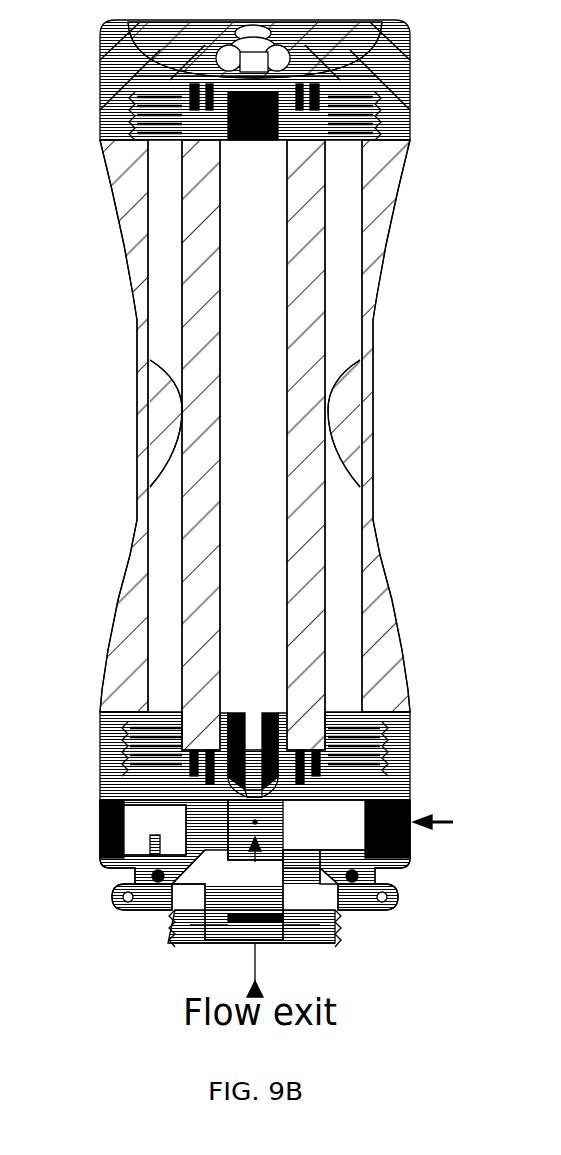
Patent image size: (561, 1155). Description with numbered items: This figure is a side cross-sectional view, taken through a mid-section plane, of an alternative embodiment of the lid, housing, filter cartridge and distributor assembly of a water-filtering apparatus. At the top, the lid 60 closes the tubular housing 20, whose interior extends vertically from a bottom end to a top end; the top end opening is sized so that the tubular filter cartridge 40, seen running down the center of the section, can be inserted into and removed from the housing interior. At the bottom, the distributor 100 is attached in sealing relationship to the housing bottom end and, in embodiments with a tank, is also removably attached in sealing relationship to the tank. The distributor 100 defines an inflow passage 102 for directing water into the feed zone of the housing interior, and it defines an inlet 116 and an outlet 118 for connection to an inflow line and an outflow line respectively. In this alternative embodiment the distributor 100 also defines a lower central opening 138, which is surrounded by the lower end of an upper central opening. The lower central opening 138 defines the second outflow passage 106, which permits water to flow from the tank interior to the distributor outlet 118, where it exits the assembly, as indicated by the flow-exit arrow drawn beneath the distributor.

The lid 60 is at (100, 77).
The housing 20 is at (123, 243).
The filter cartridge 40 is at (222, 352).
The distributor 100 is at (100, 735).
The inlet 116 is at (98, 822).
The inflow passage 102 is at (154, 830).
The second outflow passage 106 is at (257, 822).
The outlet 118 is at (412, 813).
The lower central opening 138 is at (270, 945).